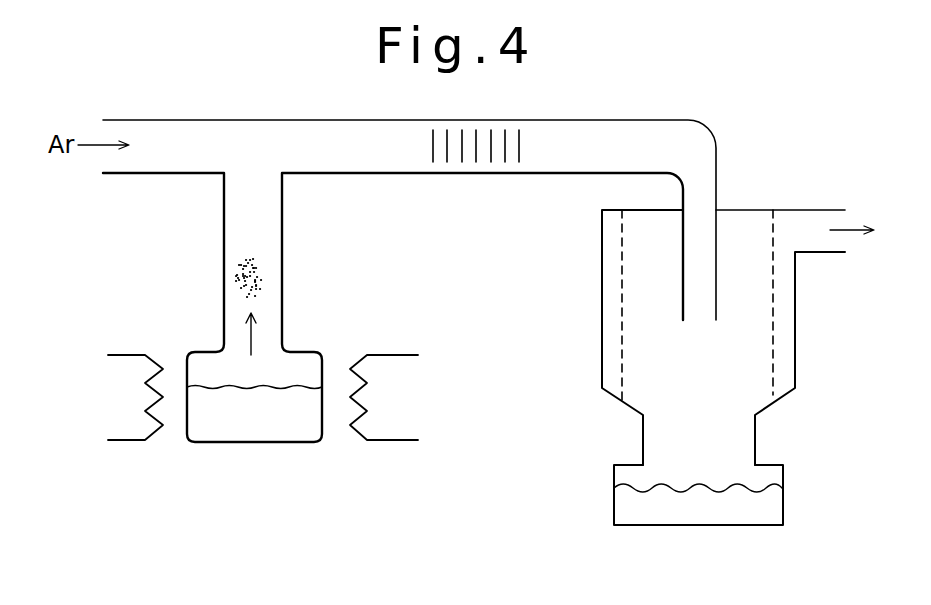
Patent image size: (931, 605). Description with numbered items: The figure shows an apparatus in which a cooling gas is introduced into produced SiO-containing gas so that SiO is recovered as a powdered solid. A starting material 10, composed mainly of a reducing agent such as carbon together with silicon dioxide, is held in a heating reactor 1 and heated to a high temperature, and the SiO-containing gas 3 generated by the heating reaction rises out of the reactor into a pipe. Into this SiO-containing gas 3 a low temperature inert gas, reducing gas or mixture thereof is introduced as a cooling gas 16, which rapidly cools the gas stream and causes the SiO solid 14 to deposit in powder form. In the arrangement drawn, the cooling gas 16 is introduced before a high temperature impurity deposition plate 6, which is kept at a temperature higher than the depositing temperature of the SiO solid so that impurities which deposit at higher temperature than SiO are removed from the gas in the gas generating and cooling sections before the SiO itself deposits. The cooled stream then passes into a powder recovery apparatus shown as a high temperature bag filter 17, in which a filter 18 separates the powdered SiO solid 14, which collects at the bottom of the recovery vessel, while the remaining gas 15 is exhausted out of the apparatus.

The heating reactor 1 is at (178, 346).
The SiO-containing gas 3 is at (258, 279).
The high temperature impurity deposition plate 6 is at (476, 150).
The starting material 10 is at (239, 440).
The powdered SiO solid 14 is at (762, 508).
The remaining gas 15 is at (855, 229).
The cooling gas 16 is at (97, 146).
The high temperature bag filter 17 is at (602, 348).
The filter 18 is at (773, 304).